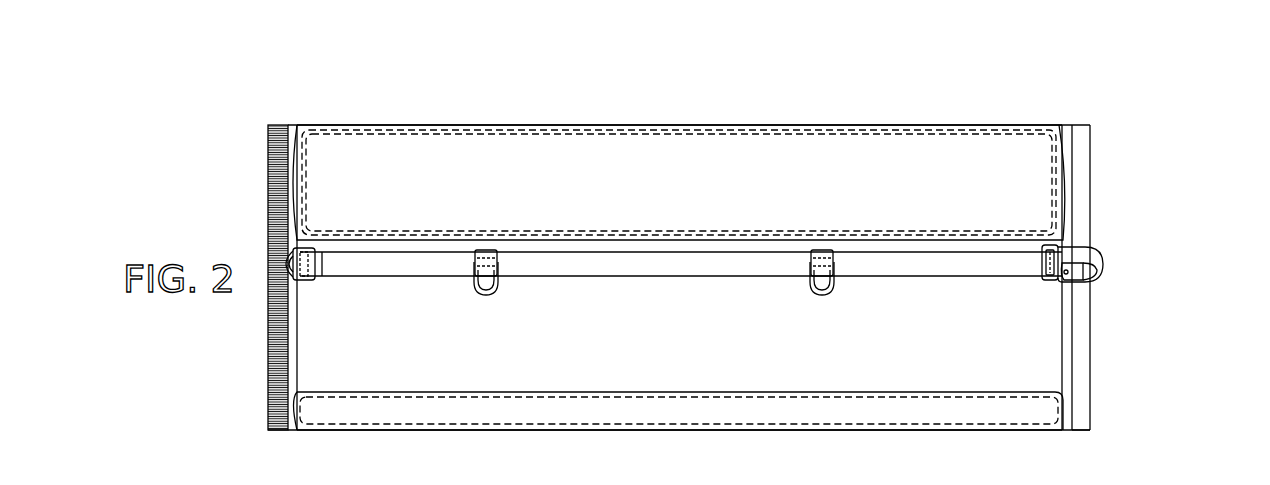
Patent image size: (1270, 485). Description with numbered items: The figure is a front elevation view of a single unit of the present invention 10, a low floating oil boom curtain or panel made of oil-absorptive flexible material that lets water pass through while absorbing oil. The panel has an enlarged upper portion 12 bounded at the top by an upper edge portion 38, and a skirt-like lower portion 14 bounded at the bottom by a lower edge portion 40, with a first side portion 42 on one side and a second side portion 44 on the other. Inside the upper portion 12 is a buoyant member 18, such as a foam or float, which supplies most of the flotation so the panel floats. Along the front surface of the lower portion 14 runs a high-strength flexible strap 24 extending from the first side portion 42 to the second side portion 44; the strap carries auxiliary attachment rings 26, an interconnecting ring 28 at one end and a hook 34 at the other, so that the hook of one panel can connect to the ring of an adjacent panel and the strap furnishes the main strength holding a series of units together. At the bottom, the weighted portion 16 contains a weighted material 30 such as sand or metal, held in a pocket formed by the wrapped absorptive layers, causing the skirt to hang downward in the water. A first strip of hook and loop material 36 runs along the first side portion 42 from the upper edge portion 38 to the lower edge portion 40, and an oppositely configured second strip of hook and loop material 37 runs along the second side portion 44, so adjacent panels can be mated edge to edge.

The present invention 10 is at (632, 102).
The upper portion 12 is at (761, 154).
The lower portion 14 is at (757, 365).
The weighted portion 16 is at (679, 438).
The buoyant member 18 is at (679, 161).
The strap 24 is at (690, 260).
The auxiliary attachment rings 26 is at (486, 296).
The interconnecting ring 28 is at (303, 282).
The weighted material 30 is at (400, 413).
The hook 34 is at (1100, 259).
The first strip of hook and loop material 36 is at (278, 418).
The second strip of hook and loop material 37 is at (1082, 148).
The upper edge portion 38 is at (970, 124).
The lower edge portion 40 is at (875, 430).
The first side portion 42 is at (278, 112).
The second side portion 44 is at (1110, 457).